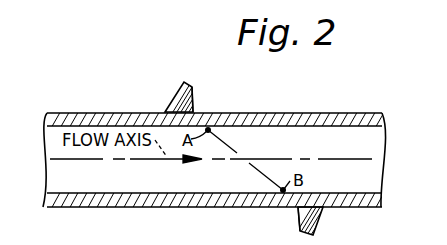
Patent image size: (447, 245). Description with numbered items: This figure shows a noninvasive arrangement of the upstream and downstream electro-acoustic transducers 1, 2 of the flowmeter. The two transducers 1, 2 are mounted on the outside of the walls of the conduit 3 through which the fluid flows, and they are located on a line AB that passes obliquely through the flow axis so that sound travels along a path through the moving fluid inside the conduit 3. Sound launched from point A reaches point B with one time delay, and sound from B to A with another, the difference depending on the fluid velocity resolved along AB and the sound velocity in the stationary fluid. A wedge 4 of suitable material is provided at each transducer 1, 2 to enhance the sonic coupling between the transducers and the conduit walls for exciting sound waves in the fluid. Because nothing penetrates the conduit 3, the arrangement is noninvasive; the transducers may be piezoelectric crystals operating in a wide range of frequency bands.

The electro-acoustic transducer 1 is at (175, 97).
The electro-acoustic transducer 2 is at (316, 220).
The conduit 3 is at (118, 112).
The wedge 4 is at (195, 99).